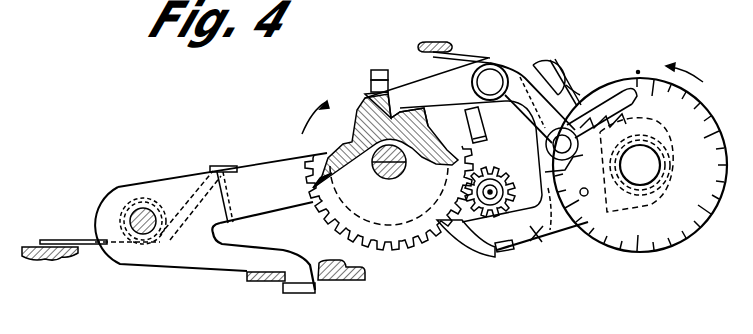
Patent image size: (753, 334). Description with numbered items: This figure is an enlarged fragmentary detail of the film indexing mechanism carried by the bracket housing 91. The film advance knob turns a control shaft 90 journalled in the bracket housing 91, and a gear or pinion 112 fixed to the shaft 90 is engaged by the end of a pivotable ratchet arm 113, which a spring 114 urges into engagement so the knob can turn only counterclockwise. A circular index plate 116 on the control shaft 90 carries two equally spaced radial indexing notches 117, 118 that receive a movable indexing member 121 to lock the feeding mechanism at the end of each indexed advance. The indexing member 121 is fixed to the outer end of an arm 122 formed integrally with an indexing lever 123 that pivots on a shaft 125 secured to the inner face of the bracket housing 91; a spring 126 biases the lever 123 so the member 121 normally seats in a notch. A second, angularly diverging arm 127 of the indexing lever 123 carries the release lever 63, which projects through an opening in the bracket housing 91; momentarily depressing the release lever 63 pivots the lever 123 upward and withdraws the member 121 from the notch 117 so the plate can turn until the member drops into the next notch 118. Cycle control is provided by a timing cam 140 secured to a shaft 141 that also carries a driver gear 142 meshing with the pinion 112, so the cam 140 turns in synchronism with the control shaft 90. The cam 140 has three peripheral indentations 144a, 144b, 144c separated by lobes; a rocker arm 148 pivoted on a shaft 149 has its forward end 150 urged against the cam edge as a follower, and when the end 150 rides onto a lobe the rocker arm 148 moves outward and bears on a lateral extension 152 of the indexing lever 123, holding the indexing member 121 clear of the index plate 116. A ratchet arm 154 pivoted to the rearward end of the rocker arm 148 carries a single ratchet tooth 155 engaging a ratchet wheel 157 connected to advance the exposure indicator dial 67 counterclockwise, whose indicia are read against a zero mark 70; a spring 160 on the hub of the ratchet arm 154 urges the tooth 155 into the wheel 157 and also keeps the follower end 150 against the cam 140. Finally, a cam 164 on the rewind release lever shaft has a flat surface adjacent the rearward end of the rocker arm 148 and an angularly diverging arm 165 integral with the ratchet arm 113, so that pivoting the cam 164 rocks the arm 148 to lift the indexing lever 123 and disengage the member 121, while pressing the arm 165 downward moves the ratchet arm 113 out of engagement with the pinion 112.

The release lever 63 is at (296, 294).
The exposure indicator dial 67 is at (657, 250).
The zero mark 70 is at (645, 71).
The control shaft 90 is at (490, 192).
The bracket housing 91 is at (44, 263).
The gear 112 is at (512, 180).
The ratchet arm 113 is at (537, 238).
The spring 114 is at (567, 85).
The circular index plate 116 is at (457, 243).
The indexing notch 117 is at (470, 160).
The indexing notch 118 is at (508, 252).
The indexing member 121 is at (523, 167).
The arm 122 is at (452, 106).
The indexing lever 123 is at (247, 183).
The shaft 125 is at (146, 212).
The spring 126 is at (218, 166).
The arm 127 is at (214, 257).
The timing cam 140 is at (329, 154).
The shaft 141 is at (375, 168).
The driver gear 142 is at (337, 223).
The peripheral indentation 144a is at (435, 128).
The peripheral indentation 144b is at (400, 113).
The peripheral indentation 144c is at (350, 137).
The rocker arm 148 is at (417, 80).
The shaft 149 is at (491, 80).
The forward end 150 is at (389, 108).
The lateral extension 152 is at (374, 70).
The ratchet arm 154 is at (604, 90).
The ratchet tooth 155 is at (640, 71).
The ratchet wheel 157 is at (630, 122).
The spring 160 is at (518, 78).
The cam 164 is at (543, 73).
The angularly diverging arm 165 is at (580, 66).